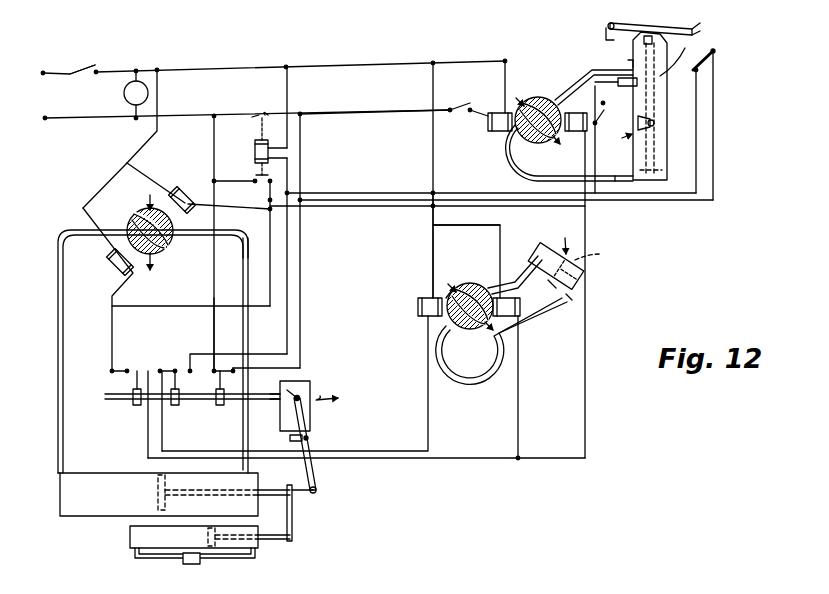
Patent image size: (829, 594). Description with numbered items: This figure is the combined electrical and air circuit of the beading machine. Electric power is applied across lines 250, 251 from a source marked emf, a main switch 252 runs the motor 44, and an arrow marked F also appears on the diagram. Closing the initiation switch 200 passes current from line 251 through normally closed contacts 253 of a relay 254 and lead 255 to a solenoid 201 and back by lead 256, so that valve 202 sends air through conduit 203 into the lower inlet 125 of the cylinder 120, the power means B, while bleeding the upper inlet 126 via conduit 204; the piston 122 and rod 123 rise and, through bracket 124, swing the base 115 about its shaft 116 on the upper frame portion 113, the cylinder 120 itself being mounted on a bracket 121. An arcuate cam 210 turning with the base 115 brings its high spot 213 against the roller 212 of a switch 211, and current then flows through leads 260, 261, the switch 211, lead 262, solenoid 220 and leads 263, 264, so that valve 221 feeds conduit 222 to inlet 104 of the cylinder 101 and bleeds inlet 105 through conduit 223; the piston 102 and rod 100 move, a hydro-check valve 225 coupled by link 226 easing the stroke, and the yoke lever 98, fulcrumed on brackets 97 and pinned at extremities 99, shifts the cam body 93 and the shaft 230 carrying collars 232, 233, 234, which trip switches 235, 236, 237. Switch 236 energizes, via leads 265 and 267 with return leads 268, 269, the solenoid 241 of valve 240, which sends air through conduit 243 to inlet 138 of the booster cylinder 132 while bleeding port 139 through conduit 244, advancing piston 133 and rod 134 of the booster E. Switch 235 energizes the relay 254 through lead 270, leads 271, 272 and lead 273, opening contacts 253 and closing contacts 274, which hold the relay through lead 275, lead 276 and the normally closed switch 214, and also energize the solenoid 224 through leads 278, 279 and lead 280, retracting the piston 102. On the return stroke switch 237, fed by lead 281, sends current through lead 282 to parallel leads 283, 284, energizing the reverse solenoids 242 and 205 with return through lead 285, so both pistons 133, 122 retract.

The line 250 is at (50, 74).
The main switch 252 is at (100, 72).
The line 251 is at (66, 126).
The motor 44 is at (124, 95).
The lead 264 is at (148, 144).
The lead 263 is at (150, 180).
The lead 280 is at (104, 186).
The lead 279 is at (110, 296).
The solenoid 220 is at (183, 194).
The valve 221 is at (170, 245).
The second solenoid 224 is at (110, 258).
The conduit 223 is at (66, 364).
The conduit 222 is at (244, 263).
The lead 278 is at (266, 274).
The lead 270 is at (206, 135).
The normally closed contacts 253 is at (262, 116).
The relay 254 is at (255, 151).
The contacts 274 is at (256, 175).
The lead 275 is at (228, 186).
The lead 276 is at (268, 200).
The lead 273 is at (290, 86).
The lead 255 is at (408, 104).
The lead 260 is at (302, 160).
The lead 265 is at (306, 270).
The return lead 269 is at (432, 162).
The return lead 268 is at (432, 236).
The lead 285 is at (504, 232).
The lead 272 is at (274, 310).
The lead 281 is at (124, 312).
The lead 271 is at (212, 284).
The lead 261 is at (348, 208).
The lead 262 is at (714, 172).
The switch 200 is at (462, 108).
The lead 256 is at (503, 78).
The solenoid 201 is at (494, 136).
The valve 202 is at (546, 94).
The second solenoid 205 is at (574, 134).
The conduit 203 is at (520, 178).
The conduit 204 is at (580, 68).
The inlet 125 is at (634, 186).
The pneumatic cylinder 120 is at (660, 148).
The rod 123 is at (654, 106).
The bracket 124 is at (648, 38).
The shaft 116 is at (614, 27).
The upper frame portion 113 is at (604, 38).
The base 115 is at (698, 26).
The roller 212 is at (698, 56).
The switch 211 is at (716, 56).
The arcuate cam 210 is at (664, 66).
The inlet 126 is at (628, 62).
The normally closed switch 214 is at (618, 96).
The high spot 213 is at (612, 116).
The power means B is at (623, 139).
The bracket 121 is at (656, 126).
The piston 122 is at (664, 170).
The solenoid 241 is at (416, 300).
The valve 240 is at (476, 334).
The conduit 244 is at (490, 284).
The reverse solenoid 242 is at (508, 300).
The conduit 243 is at (530, 340).
The port 139 is at (530, 272).
The rod 134 is at (536, 254).
The piston 133 is at (599, 260).
The booster power means E is at (561, 237).
The pneumatic cylinder 132 is at (552, 292).
The inlet 138 is at (574, 306).
The lead 283 is at (520, 428).
The lead 284 is at (586, 430).
The lead 282 is at (418, 460).
The lead 267 is at (190, 453).
The shaft 230 is at (106, 394).
The collar 234 is at (132, 404).
The collar 233 is at (182, 406).
The collar 232 is at (226, 406).
The switch 237 is at (136, 370).
The switch 236 is at (172, 370).
The switch 235 is at (226, 376).
The cam body 93 is at (312, 416).
The diametric extremities 99 is at (291, 390).
The direction F is at (327, 388).
The depending brackets 97 is at (310, 440).
The yoke-type lever 98 is at (318, 474).
The reciprocating rod 100 is at (308, 494).
The cylinder 101 is at (100, 504).
The piston 102 is at (156, 492).
The inlet 104 is at (240, 478).
The inlet 105 is at (68, 468).
The hydro-check valve 225 is at (210, 545).
The link 226 is at (292, 524).
The e.m.f. source emf is at (44, 94).